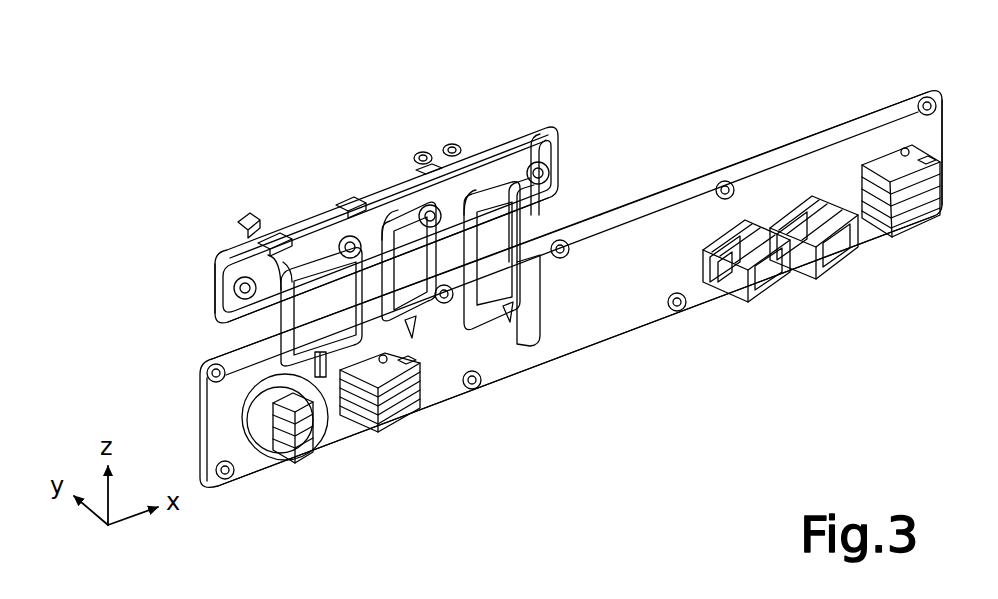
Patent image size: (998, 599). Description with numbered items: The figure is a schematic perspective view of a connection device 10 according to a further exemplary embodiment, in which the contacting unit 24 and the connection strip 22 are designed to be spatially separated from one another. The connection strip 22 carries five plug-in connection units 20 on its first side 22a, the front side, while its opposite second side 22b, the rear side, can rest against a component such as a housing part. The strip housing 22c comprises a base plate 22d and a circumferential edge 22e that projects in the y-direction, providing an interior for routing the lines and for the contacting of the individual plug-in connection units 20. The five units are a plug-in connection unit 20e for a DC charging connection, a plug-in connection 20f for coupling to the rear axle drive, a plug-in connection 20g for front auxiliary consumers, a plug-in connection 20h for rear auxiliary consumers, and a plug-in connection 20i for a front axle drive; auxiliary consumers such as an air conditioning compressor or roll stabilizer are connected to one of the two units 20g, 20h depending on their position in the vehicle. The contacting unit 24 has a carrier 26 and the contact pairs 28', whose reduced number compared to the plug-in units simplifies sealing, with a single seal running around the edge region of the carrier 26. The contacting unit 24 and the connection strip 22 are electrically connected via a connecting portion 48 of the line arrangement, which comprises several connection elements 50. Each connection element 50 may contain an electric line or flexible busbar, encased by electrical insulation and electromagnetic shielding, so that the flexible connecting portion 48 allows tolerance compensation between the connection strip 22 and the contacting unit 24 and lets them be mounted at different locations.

The connection device 10 is at (124, 190).
The plug-in connection units 20 is at (602, 341).
The connection strip 22 is at (202, 376).
The first side 22a is at (850, 140).
The second side 22b is at (787, 140).
The strip housing 22c is at (900, 130).
The base plate 22d is at (606, 322).
The circumferential edge 22e is at (748, 163).
The contacting unit 24 is at (212, 265).
The carrier 26 is at (214, 295).
The contact pairs 28' is at (252, 211).
The connecting portion 48 is at (544, 214).
The connection elements 50 is at (322, 252).
The plug-in connection unit 20e is at (307, 464).
The plug-in connection 20f is at (397, 432).
The plug-in connection 20g is at (755, 306).
The plug-in connection 20h is at (826, 282).
The plug-in connection 20i is at (908, 238).